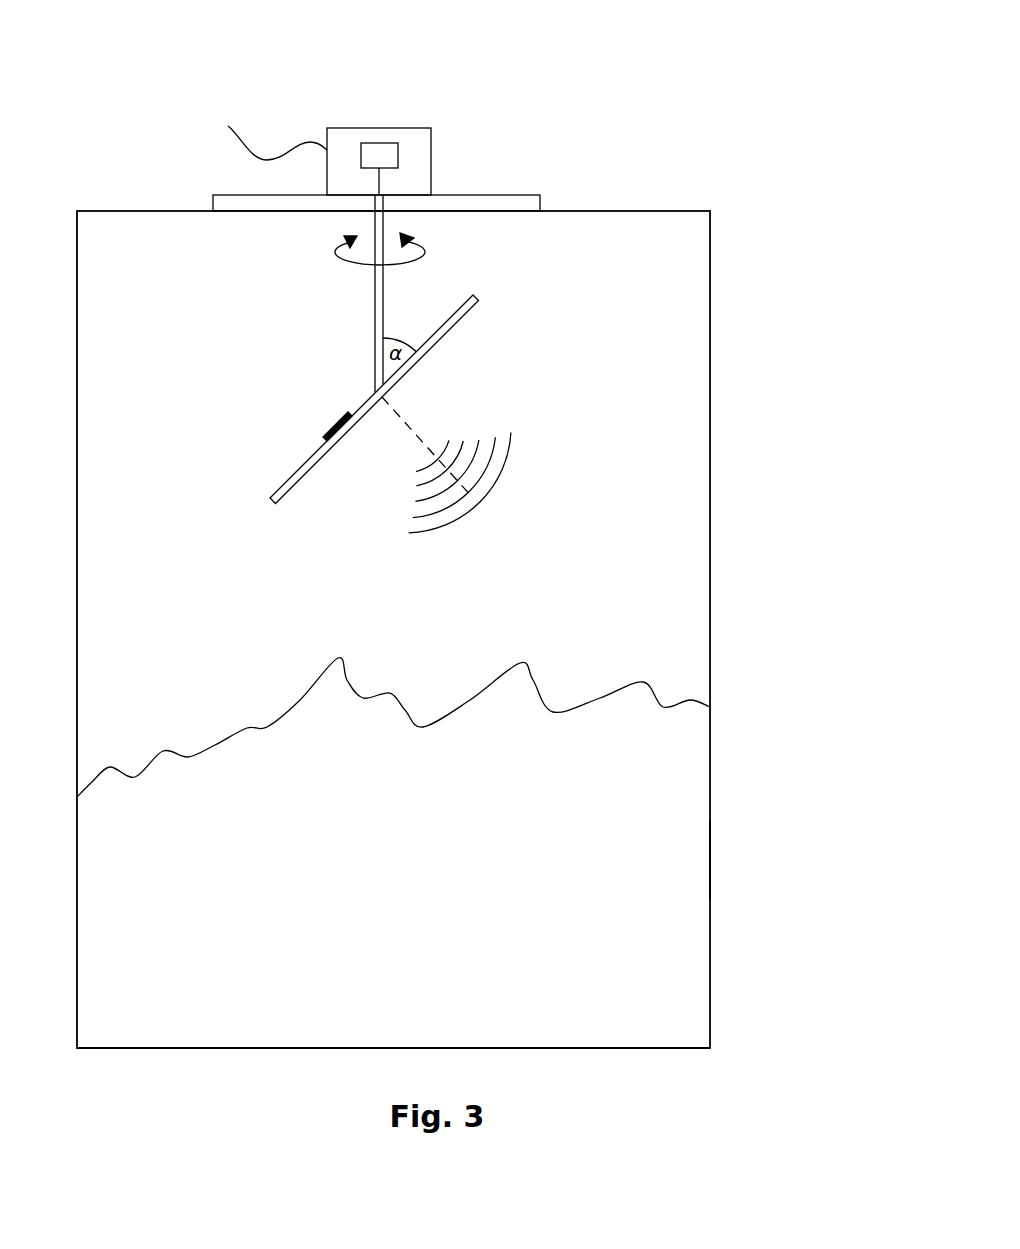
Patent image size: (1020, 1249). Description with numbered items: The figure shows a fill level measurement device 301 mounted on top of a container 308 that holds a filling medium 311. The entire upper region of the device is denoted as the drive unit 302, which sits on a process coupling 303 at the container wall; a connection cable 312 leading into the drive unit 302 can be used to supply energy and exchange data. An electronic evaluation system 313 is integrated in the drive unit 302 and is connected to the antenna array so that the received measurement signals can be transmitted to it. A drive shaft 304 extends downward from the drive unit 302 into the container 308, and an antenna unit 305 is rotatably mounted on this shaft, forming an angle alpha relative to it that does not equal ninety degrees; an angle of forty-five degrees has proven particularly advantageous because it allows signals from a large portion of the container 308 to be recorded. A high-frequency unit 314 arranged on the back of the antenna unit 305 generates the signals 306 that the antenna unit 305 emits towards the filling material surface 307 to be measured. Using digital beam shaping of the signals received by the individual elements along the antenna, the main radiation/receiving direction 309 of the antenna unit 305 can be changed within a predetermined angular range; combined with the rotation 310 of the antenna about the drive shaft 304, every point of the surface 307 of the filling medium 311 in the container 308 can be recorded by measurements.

The measurement device 301 is at (348, 101).
The drive unit 302 is at (431, 143).
The process coupling 303 is at (525, 195).
The drive shaft 304 is at (383, 288).
The antenna unit 305 is at (441, 339).
The signals 306 is at (510, 476).
The filling material surface 307 is at (535, 678).
The container 308 is at (712, 508).
The main radiation/receiving direction 309 is at (403, 423).
The rotation 310 is at (345, 263).
The filling medium 311 is at (663, 863).
The connection cable 312 is at (297, 145).
The electronic evaluation system 313 is at (378, 150).
The high-frequency unit 314 is at (340, 422).